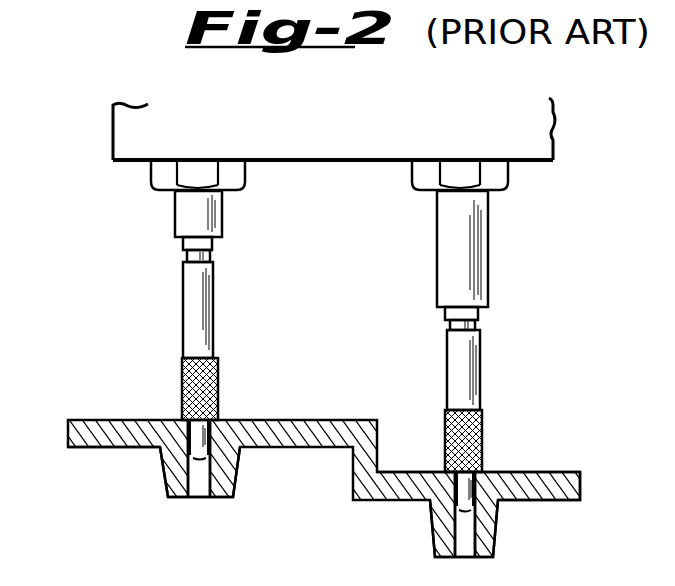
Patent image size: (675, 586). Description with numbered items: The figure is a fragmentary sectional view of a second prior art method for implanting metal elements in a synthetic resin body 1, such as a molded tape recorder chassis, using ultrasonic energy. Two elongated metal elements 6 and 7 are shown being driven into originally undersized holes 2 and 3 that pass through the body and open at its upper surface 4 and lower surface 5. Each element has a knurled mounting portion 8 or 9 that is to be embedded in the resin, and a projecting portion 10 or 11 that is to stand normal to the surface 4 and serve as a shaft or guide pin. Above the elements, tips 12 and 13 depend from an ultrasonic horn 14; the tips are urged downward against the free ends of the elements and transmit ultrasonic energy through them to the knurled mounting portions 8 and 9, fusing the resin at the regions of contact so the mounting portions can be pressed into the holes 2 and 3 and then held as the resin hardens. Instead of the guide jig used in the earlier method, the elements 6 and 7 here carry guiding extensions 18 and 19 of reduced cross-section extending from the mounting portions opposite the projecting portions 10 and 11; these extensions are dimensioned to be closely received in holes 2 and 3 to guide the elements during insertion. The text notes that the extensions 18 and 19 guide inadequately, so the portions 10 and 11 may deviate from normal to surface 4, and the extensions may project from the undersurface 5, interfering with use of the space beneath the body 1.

The synthetic resin body 1 is at (577, 494).
The hole 2 is at (193, 482).
The hole 3 is at (453, 532).
The upper surface 4 is at (130, 420).
The lower surface 5 is at (108, 449).
The metal element 6 is at (188, 325).
The metal element 7 is at (475, 351).
The mounting portion 8 is at (218, 383).
The mounting portion 9 is at (484, 440).
The projecting portion 10 is at (186, 298).
The projecting portion 11 is at (483, 360).
The tip 12 is at (175, 222).
The tip 13 is at (490, 256).
The ultrasonic horn 14 is at (115, 141).
The guiding extension 18 is at (214, 448).
The guiding extension 19 is at (482, 504).